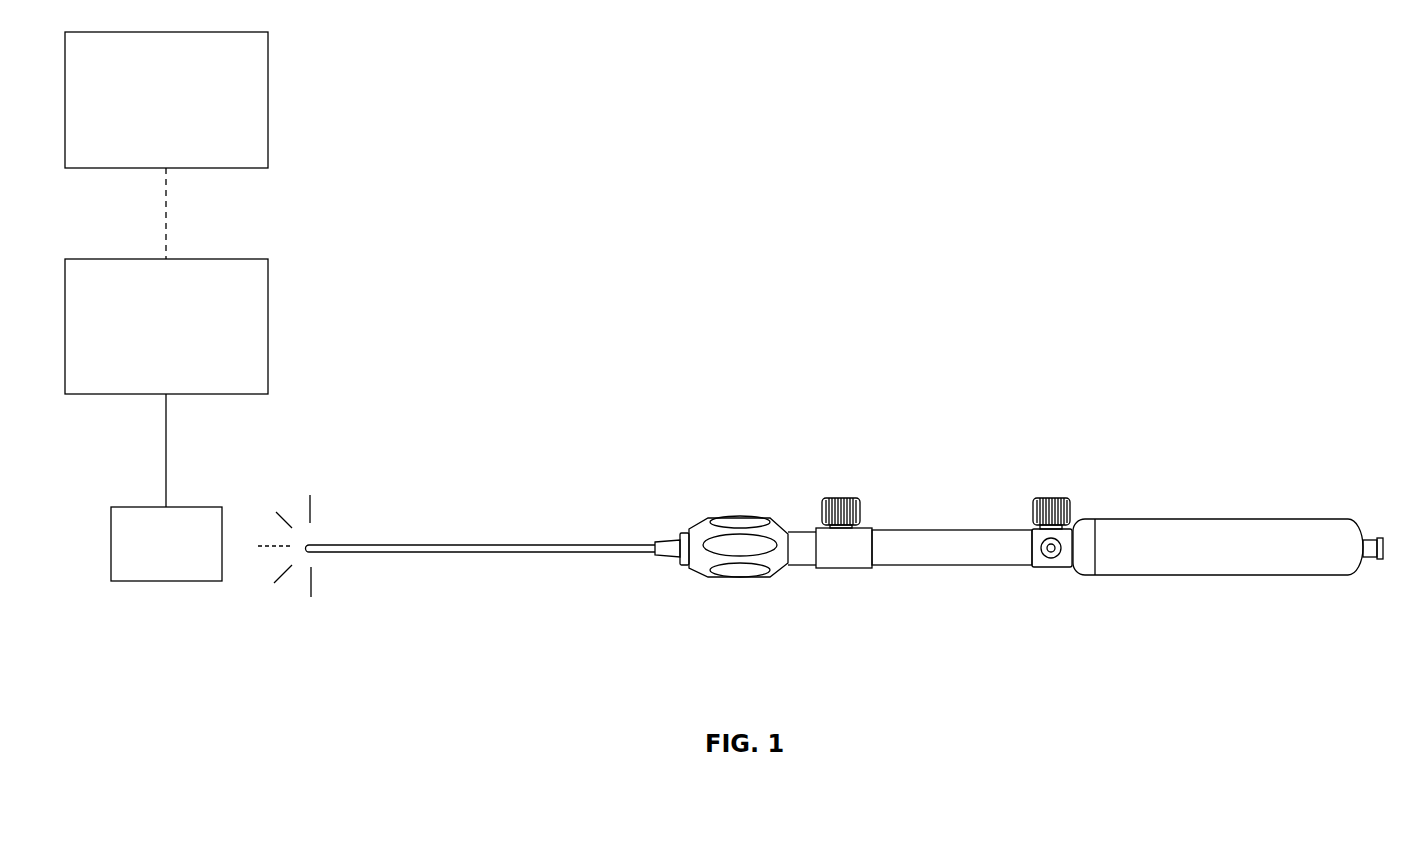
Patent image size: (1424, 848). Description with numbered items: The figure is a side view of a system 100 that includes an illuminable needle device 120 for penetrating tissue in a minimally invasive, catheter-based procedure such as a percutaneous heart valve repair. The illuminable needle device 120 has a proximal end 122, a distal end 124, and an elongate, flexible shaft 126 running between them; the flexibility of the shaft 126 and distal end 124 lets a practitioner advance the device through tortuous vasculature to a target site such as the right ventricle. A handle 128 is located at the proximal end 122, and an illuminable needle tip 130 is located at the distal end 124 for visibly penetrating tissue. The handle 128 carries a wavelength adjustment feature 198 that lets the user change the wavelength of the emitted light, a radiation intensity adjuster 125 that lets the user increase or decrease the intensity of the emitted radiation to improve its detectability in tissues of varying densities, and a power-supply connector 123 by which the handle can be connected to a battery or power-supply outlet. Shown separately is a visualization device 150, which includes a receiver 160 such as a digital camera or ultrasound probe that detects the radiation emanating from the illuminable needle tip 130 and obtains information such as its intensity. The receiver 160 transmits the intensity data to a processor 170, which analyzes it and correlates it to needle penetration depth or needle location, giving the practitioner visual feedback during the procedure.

The system 100 is at (750, 207).
The illuminable needle device 120 is at (1247, 548).
The proximal end 122 is at (1302, 575).
The power-supply connector 123 is at (1380, 560).
The distal end 124 is at (335, 545).
The radiation intensity adjuster 125 is at (1050, 497).
The elongate, flexible shaft 126 is at (497, 545).
The handle 128 is at (907, 530).
The illuminable needle tip 130 is at (310, 553).
The visualization device 150 is at (166, 326).
The receiver 160 is at (166, 544).
The processor 170 is at (166, 100).
The wavelength adjustment feature 198 is at (843, 497).